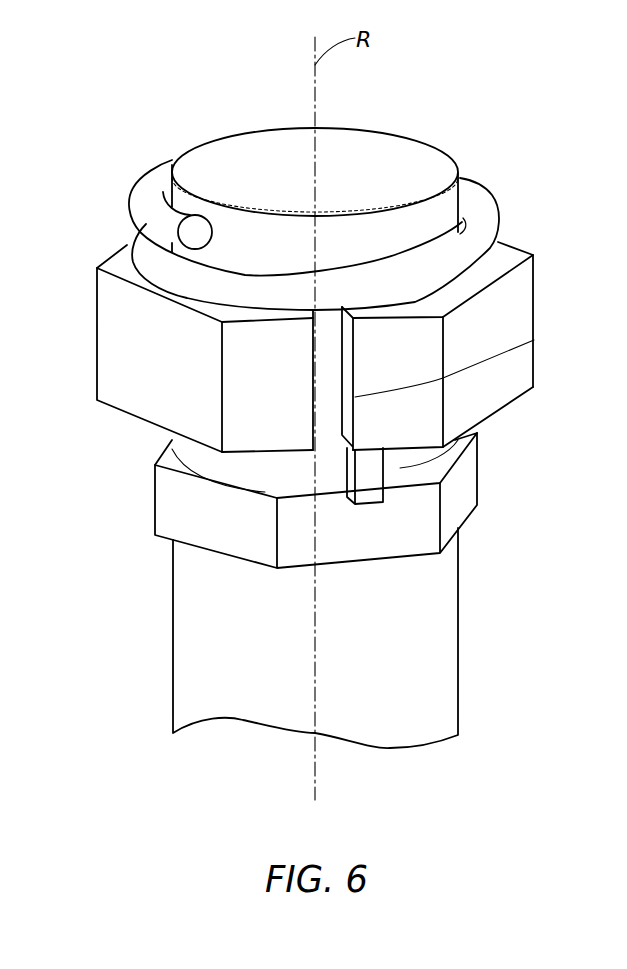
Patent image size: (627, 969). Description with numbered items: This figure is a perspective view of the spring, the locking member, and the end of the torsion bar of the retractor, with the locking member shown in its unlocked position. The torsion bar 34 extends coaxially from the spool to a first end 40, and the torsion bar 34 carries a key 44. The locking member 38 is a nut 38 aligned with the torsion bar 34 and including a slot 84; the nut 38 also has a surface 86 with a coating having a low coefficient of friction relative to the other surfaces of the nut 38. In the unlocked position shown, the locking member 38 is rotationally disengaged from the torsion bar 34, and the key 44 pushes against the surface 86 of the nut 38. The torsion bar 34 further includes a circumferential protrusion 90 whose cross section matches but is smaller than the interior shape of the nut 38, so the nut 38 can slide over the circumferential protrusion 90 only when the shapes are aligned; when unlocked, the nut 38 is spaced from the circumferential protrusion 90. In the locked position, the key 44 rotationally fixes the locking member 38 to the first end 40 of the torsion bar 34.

The torsion bar 34 is at (458, 678).
The locking member 38 is at (535, 295).
The first end 40 is at (400, 133).
The key 44 is at (383, 455).
The slot 84 is at (534, 340).
The surface 86 is at (117, 403).
The circumferential protrusion 90 is at (478, 492).